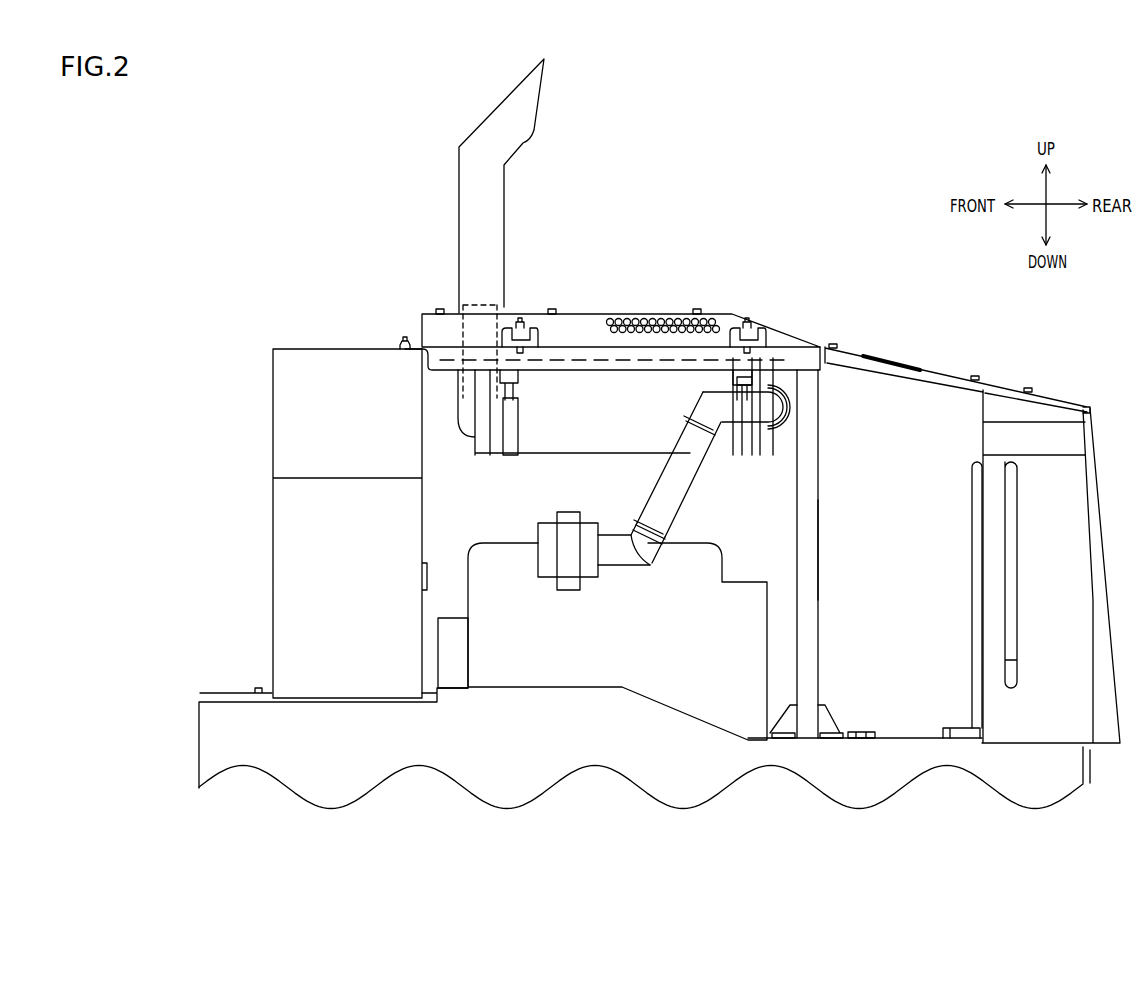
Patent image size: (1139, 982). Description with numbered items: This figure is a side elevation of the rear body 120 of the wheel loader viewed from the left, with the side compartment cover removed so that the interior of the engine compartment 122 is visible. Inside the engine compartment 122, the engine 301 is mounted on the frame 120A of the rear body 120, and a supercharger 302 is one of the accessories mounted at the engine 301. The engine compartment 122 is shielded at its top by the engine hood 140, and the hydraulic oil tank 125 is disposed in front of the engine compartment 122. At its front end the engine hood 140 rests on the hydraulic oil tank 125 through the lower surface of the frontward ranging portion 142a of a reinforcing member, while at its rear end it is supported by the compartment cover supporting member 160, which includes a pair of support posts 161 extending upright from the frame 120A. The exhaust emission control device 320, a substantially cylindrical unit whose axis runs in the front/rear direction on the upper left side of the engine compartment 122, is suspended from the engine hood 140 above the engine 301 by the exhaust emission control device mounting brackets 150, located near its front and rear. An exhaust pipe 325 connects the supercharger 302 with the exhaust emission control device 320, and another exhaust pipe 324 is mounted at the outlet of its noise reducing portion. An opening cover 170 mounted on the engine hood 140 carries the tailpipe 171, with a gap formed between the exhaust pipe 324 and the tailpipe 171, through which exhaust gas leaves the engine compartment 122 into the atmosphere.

The rear body 120 is at (842, 183).
The frame 120A is at (901, 748).
The engine compartment 122 is at (782, 485).
The hydraulic oil tank 125 is at (325, 365).
The engine hood 140 is at (758, 306).
The frontward ranging portion 142a is at (400, 352).
The exhaust emission control device mounting bracket 150 is at (542, 337).
The compartment cover supporting member 160 is at (826, 499).
The support post 161 is at (810, 563).
The opening cover 170 is at (600, 317).
The tailpipe 171 is at (500, 237).
The engine 301 is at (753, 645).
The supercharger 302 is at (572, 583).
The exhaust emission control device 320 is at (563, 440).
The exhaust pipe 324 is at (497, 305).
The exhaust pipe 325 is at (730, 413).